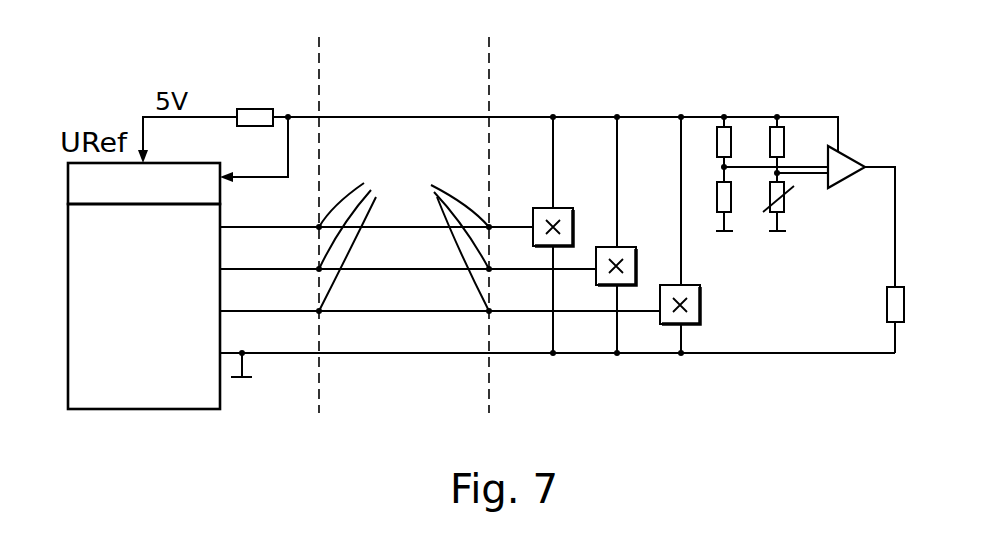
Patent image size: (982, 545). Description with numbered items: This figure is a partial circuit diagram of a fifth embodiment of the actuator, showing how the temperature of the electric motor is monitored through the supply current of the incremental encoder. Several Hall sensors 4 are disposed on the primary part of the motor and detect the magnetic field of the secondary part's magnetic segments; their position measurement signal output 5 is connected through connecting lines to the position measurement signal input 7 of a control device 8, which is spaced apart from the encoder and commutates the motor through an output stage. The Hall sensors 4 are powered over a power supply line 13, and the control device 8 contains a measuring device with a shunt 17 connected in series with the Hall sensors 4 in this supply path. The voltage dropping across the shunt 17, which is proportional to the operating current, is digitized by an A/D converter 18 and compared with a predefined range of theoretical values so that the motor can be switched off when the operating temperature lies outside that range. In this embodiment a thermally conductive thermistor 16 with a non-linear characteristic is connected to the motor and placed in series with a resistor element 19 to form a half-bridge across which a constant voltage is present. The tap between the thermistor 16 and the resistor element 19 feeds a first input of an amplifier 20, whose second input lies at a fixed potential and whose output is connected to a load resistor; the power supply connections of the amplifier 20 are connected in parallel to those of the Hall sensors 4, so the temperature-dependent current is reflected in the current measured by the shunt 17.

The Hall sensors 4 is at (600, 255).
The position measurement signal output 5 is at (458, 238).
The position measurement signal input 7 is at (351, 238).
The control device 8 is at (154, 300).
The power supply line 13 is at (383, 117).
The thermistor 16 is at (783, 203).
The shunt 17 is at (253, 118).
The A/D converter 18 is at (159, 195).
The resistor element 19 is at (777, 140).
The amplifier 20 is at (842, 163).